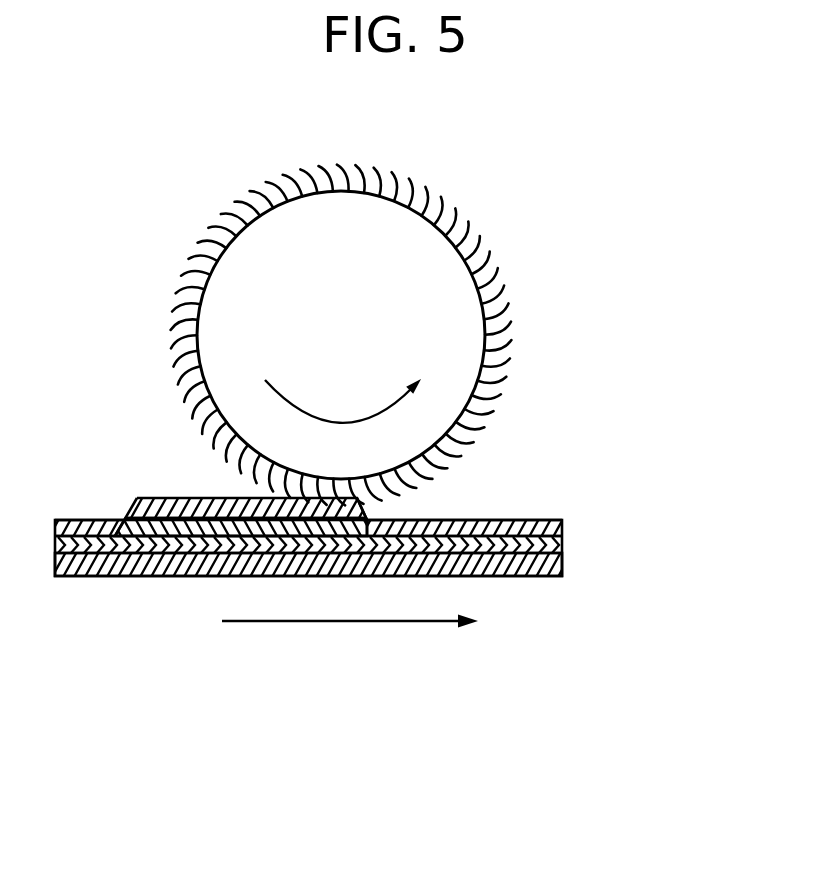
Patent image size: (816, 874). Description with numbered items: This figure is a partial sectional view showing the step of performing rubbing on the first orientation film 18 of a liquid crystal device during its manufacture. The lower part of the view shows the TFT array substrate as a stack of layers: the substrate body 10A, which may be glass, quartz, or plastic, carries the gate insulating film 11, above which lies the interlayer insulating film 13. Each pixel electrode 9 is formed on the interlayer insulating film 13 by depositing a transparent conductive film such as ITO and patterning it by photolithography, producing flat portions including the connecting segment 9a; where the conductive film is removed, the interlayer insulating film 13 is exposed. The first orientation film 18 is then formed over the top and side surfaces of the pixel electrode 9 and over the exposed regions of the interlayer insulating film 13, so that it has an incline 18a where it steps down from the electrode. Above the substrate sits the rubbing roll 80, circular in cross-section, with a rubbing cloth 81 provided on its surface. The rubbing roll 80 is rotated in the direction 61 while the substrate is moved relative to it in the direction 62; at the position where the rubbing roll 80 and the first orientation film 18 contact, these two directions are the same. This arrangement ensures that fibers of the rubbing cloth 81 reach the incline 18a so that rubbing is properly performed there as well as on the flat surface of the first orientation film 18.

The rubbing roll 80 is at (430, 280).
The rubbing cloth 81 is at (514, 340).
The rotation direction of rubbing roll 61 is at (338, 420).
The movement direction of TFT array substrate 62 is at (343, 622).
The substrate body 10A is at (667, 475).
The gate insulating film 11 is at (562, 566).
The interlayer insulating film 13 is at (562, 545).
The first orientation film 18 is at (562, 524).
The incline 18a is at (368, 500).
The pixel electrode 9 is at (178, 537).
The connecting segment 9a is at (246, 596).